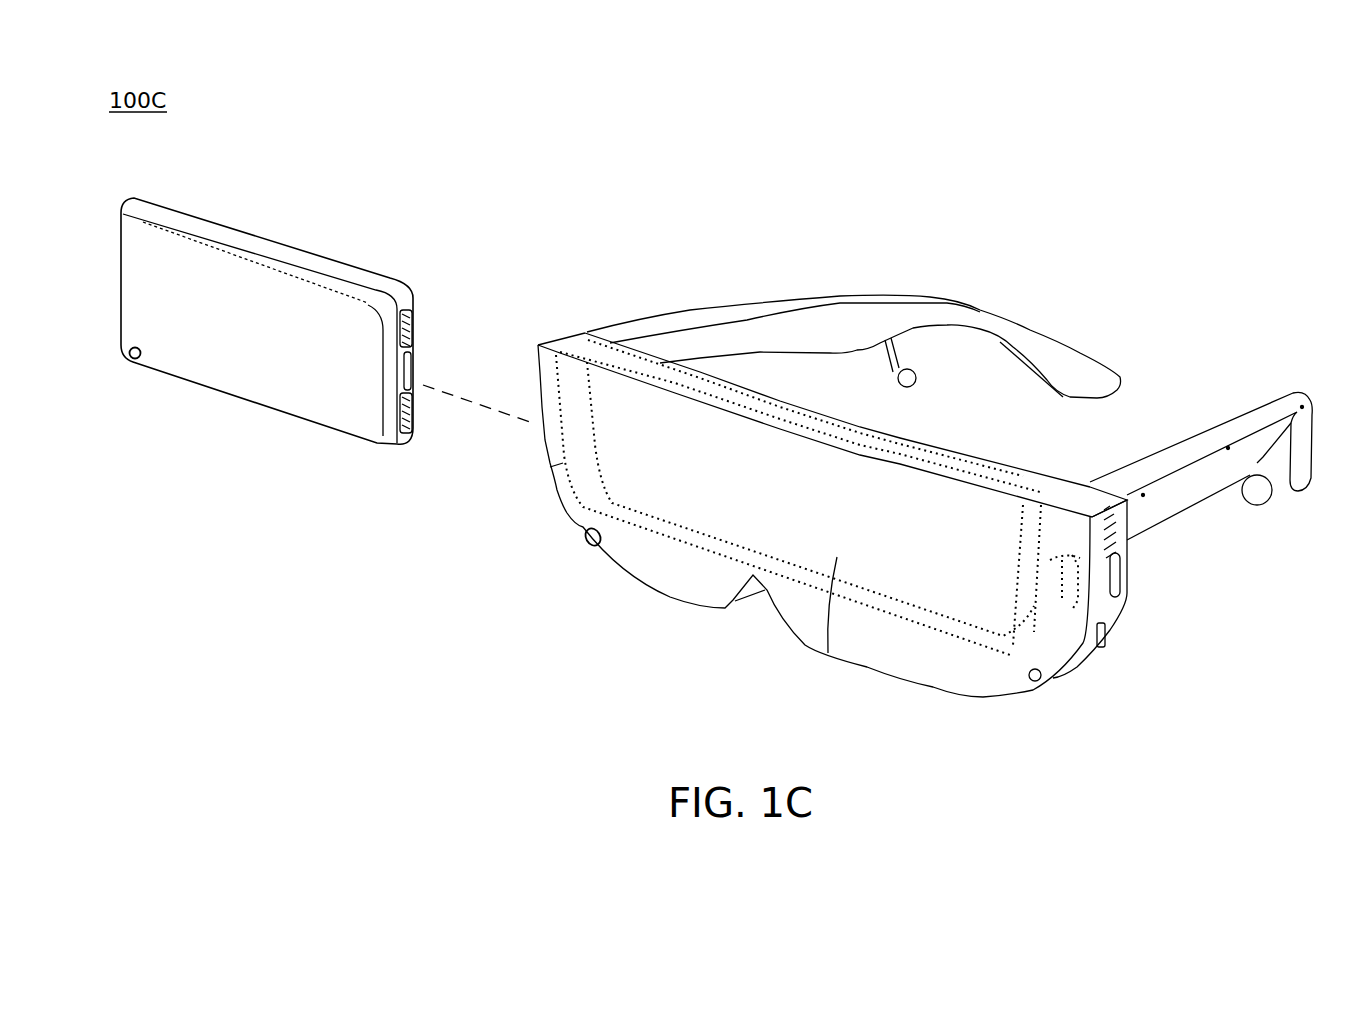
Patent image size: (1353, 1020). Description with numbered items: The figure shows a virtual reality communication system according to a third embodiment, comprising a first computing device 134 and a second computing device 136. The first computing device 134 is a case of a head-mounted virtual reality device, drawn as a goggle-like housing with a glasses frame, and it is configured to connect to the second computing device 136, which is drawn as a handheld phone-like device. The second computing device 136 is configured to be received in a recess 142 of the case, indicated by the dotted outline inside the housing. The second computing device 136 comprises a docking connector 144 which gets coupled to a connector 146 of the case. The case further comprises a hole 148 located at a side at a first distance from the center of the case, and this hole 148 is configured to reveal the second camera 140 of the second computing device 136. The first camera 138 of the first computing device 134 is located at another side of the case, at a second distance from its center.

The first computing device 134 is at (813, 315).
The second computing device 136 is at (278, 318).
The first camera 138 is at (1043, 680).
The second camera 140 is at (140, 360).
The recess 142 is at (583, 472).
The docking connector 144 is at (415, 373).
The connector 146 is at (1067, 572).
The hole 148 is at (600, 543).